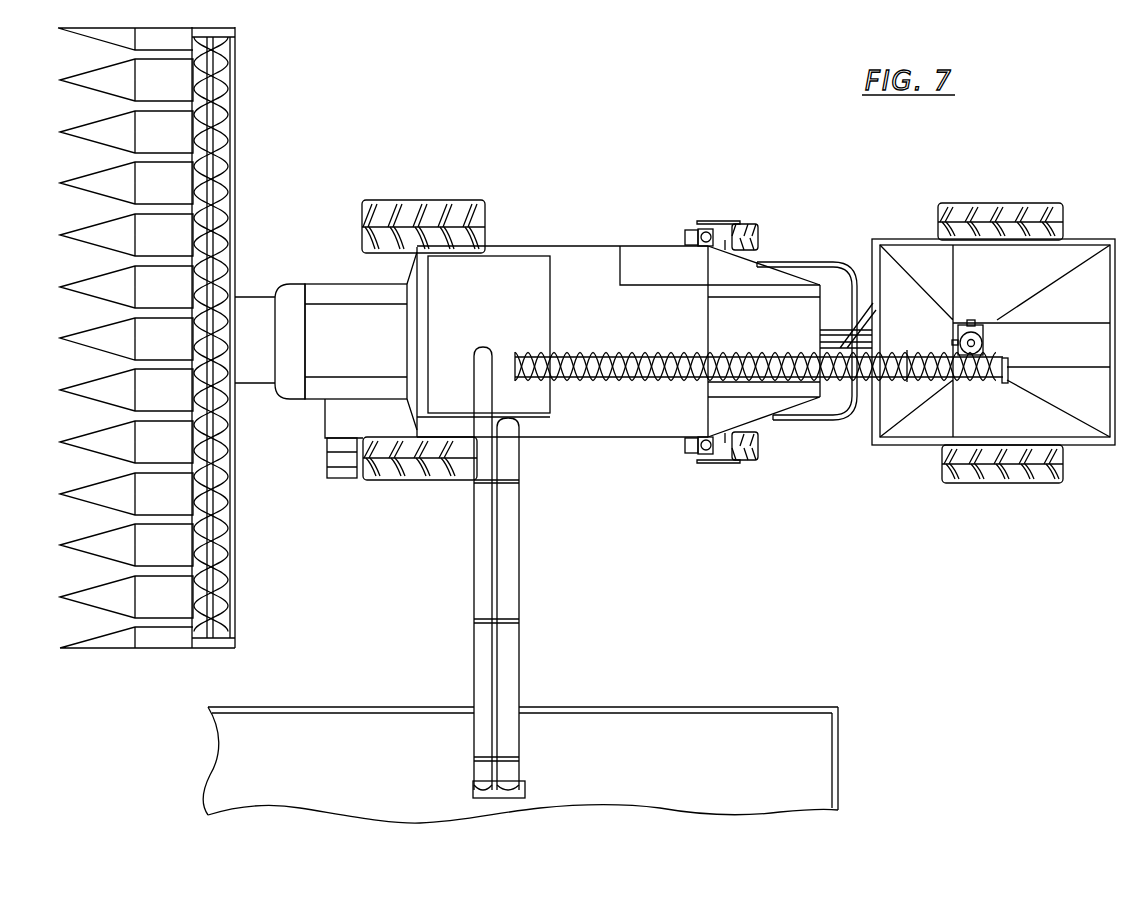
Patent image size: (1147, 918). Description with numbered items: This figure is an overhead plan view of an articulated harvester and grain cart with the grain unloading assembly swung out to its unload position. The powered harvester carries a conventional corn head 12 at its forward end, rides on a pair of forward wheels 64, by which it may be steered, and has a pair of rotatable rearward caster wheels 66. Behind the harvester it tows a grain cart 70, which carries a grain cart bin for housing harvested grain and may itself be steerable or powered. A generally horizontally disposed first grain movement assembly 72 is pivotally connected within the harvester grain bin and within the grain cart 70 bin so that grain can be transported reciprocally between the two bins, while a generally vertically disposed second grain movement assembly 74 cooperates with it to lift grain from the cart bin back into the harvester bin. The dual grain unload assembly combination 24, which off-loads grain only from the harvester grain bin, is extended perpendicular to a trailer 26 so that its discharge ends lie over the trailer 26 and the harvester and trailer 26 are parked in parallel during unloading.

The corn head 12 is at (228, 78).
The grain unload assembly combination 24 is at (518, 575).
The trailer 26 is at (730, 708).
The forward wheels 64 is at (413, 212).
The rearward caster wheels 66 is at (745, 228).
The grain cart 70 is at (1093, 243).
The first grain movement assembly 72 is at (863, 380).
The second grain movement assembly 74 is at (963, 322).